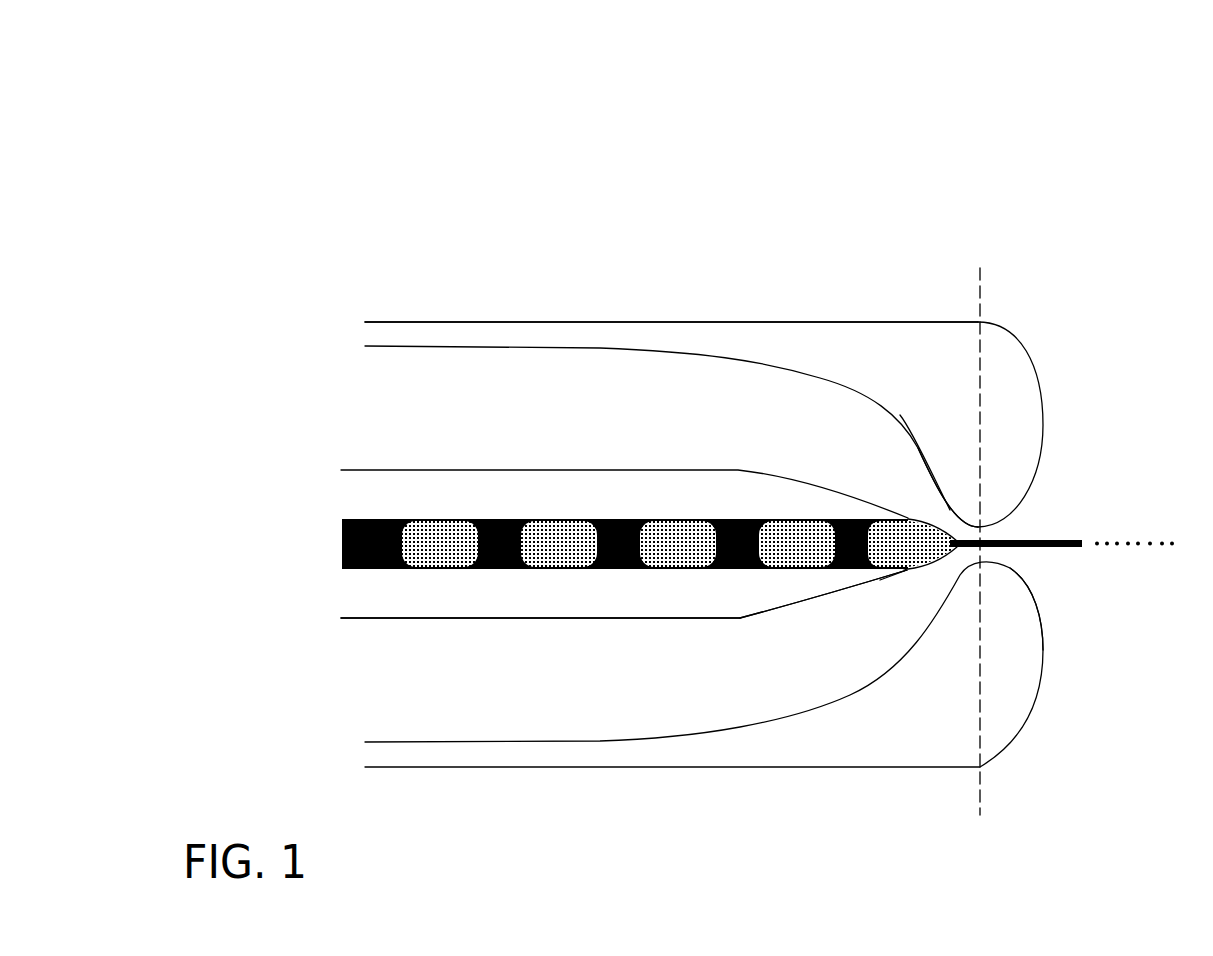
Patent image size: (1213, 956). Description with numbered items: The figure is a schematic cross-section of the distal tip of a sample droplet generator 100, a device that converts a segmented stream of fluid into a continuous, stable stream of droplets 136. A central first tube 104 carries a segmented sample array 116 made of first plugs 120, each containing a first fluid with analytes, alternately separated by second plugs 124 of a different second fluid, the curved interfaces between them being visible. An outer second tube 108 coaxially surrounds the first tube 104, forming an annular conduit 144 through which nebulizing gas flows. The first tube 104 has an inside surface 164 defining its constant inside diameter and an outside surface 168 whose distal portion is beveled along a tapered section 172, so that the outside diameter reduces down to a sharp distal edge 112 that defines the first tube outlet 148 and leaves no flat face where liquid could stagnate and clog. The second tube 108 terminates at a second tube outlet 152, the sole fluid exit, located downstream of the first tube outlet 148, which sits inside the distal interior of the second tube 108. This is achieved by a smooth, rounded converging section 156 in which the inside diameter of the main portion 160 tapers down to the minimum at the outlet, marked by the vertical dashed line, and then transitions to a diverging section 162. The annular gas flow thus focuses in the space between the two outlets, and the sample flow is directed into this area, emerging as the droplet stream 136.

The sample droplet generator 100 is at (395, 100).
The first tube 104 is at (624, 644).
The second tube 108 is at (704, 717).
The distal edge 112 is at (903, 725).
The segmented sample array 116 is at (332, 486).
The first plugs 120 is at (679, 399).
The second plugs 124 is at (559, 398).
The stream of droplets 136 is at (1150, 480).
The annular conduit 144 is at (384, 372).
The first tube outlet 148 is at (901, 361).
The second tube outlet 152 is at (1060, 572).
The converging section 156 is at (948, 386).
The main portion 160 is at (453, 321).
The diverging section 162 is at (1020, 510).
The inside surface 164 is at (689, 411).
The outside surface 168 is at (412, 618).
The tapered section 172 is at (781, 696).